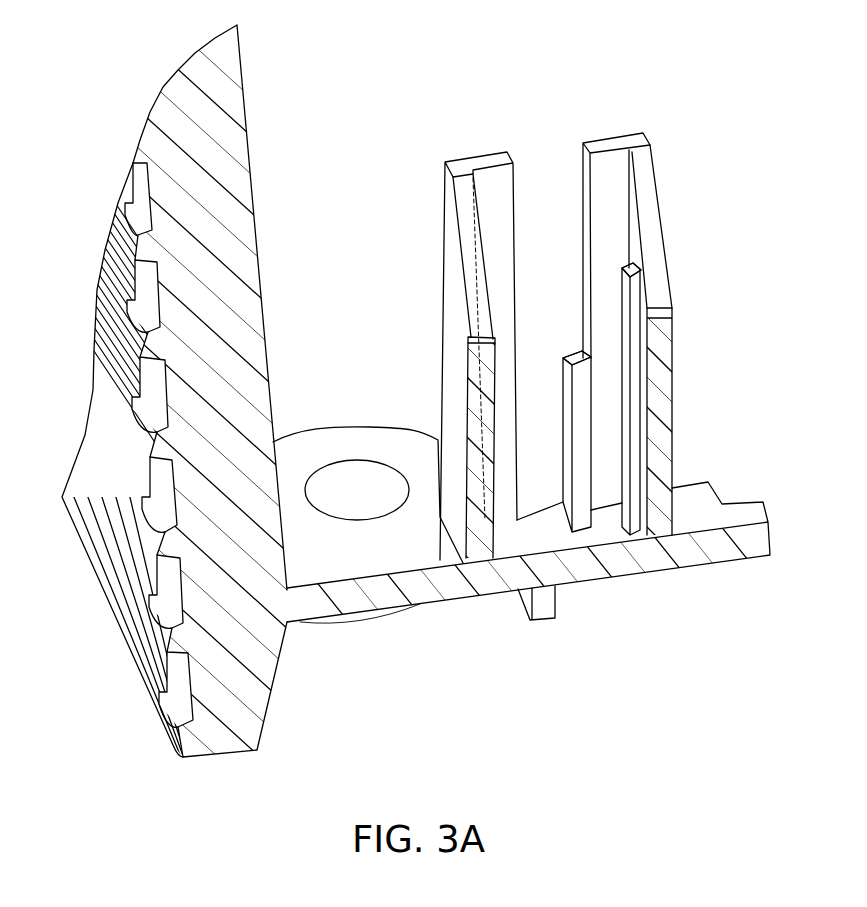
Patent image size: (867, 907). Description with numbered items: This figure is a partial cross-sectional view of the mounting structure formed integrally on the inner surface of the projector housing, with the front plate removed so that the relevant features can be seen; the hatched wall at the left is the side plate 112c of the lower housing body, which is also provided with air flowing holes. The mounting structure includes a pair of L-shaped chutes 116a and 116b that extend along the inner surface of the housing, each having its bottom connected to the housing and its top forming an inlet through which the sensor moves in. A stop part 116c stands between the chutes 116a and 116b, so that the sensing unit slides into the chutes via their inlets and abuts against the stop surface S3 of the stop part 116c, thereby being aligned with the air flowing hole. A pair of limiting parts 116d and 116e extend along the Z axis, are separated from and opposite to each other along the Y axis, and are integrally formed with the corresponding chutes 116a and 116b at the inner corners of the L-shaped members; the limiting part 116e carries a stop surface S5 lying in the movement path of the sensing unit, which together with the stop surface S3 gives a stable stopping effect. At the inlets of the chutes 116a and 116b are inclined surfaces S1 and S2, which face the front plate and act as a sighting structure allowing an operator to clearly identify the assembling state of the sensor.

The side plate 112c is at (118, 593).
The chute 116a is at (611, 140).
The chute 116b is at (469, 160).
The stop part 116c is at (563, 399).
The limiting part 116d is at (466, 324).
The limiting part 116e is at (626, 331).
The inclined surface S1 is at (656, 198).
The inclined surface S2 is at (449, 199).
The stop surface S3 is at (575, 349).
The stop surface S5 is at (638, 268).